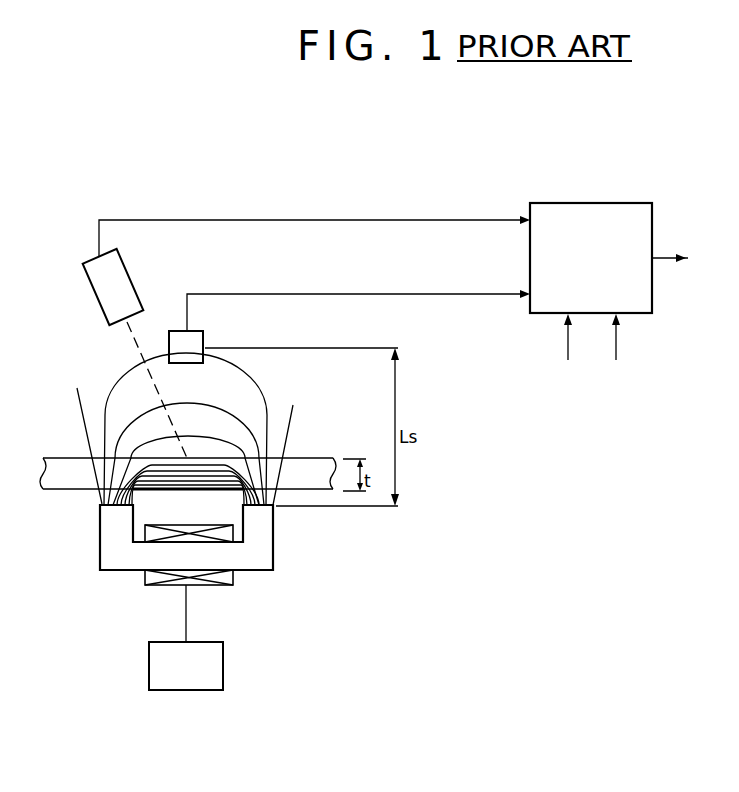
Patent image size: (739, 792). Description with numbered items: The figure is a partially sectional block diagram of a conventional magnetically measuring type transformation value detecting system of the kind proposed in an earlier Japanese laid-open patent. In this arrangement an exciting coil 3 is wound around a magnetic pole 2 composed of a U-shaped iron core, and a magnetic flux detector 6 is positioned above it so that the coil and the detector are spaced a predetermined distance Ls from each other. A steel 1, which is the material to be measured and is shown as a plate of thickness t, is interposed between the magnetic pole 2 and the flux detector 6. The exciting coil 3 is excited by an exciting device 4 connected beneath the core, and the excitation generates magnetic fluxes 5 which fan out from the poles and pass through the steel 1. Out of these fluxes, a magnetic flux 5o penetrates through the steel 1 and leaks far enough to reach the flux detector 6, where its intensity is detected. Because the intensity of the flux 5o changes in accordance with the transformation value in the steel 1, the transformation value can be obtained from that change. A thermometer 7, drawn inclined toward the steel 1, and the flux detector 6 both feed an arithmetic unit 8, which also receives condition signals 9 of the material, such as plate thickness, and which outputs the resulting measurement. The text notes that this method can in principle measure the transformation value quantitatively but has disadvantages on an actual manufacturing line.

The steel 1 is at (55, 481).
The magnetic pole 2 is at (100, 562).
The exciting coil 3 is at (145, 585).
The exciting device 4 is at (224, 662).
The magnetic fluxes 5 is at (139, 438).
The magnetic flux 5o is at (256, 378).
The magnetic flux detector 6 is at (196, 345).
The thermometer 7 is at (122, 275).
The arithmetic unit 8 is at (586, 203).
The condition signals of the material 9 is at (614, 338).